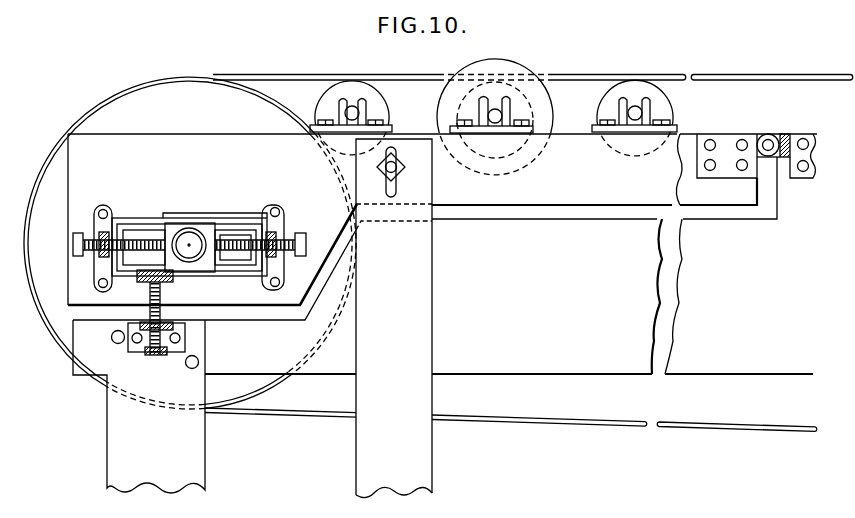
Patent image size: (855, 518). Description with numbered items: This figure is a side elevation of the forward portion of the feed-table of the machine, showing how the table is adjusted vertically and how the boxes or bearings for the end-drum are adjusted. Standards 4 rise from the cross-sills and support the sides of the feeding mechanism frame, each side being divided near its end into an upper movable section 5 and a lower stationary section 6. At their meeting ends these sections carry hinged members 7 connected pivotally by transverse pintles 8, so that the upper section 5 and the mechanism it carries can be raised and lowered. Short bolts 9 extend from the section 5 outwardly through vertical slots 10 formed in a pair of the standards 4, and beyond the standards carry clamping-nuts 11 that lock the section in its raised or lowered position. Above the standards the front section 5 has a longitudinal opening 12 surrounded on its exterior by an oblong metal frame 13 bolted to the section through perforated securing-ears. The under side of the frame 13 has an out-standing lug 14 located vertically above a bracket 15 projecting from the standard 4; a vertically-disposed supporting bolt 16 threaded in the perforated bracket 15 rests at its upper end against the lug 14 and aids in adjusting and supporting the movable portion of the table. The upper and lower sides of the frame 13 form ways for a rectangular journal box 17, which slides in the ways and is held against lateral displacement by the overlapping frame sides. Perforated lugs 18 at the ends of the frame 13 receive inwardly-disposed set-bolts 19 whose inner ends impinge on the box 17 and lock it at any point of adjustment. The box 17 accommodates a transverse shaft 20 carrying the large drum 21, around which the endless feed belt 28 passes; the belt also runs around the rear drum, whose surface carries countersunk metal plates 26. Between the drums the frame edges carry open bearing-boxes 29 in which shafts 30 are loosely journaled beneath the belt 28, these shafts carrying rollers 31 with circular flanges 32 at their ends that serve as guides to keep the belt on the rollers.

The standards 4 is at (252, 318).
The upper movable sections 5 is at (442, 169).
The lower stationary sections 6 is at (509, 265).
The hinged members 7 is at (726, 145).
The transverse pintles 8 is at (769, 134).
The short bolts 9 is at (377, 167).
The vertical slots 10 is at (387, 195).
The clamping-nuts 11 is at (406, 169).
The longitudinal openings 12 is at (148, 237).
The oblong metal frames 13 is at (112, 211).
The out-standing lugs 14 is at (150, 278).
The brackets 15 is at (164, 322).
The supporting bolts 16 is at (153, 356).
The journal boxes 17 is at (212, 226).
The perforated lugs 18 is at (100, 250).
The set-bolts 19 is at (73, 242).
The transverse shaft 20 is at (190, 240).
The large drum 21 is at (113, 113).
The countersunk metal plates 26 is at (511, 463).
The endless feed belt 28 is at (292, 73).
The open bearing-boxes 29 is at (367, 115).
The shafts 30 is at (350, 116).
The rollers 31 is at (343, 80).
The circular flanges 32 is at (522, 66).